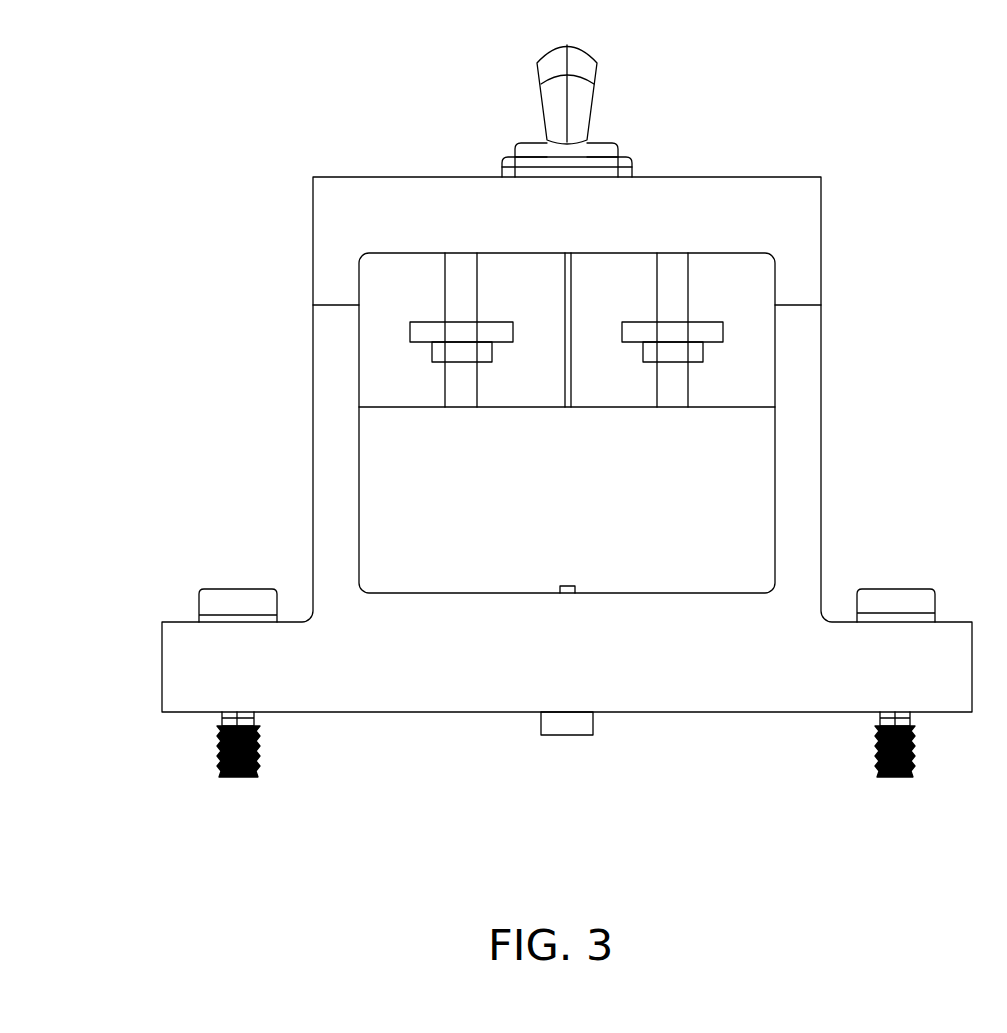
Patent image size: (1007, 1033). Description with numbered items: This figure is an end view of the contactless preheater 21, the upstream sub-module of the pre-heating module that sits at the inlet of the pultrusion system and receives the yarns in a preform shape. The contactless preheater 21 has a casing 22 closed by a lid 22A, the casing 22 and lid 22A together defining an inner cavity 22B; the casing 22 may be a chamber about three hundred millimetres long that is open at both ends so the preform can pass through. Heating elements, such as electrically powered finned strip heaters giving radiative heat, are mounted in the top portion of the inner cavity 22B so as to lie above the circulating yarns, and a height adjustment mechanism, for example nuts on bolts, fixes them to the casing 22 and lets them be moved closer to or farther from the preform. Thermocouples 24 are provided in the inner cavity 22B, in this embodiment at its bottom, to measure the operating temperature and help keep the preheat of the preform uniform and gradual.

The contactless preheater 21 is at (886, 204).
The casing 22 is at (305, 468).
The lid 22A is at (307, 207).
The inner cavity 22B is at (645, 545).
The thermocouples 24 is at (531, 722).